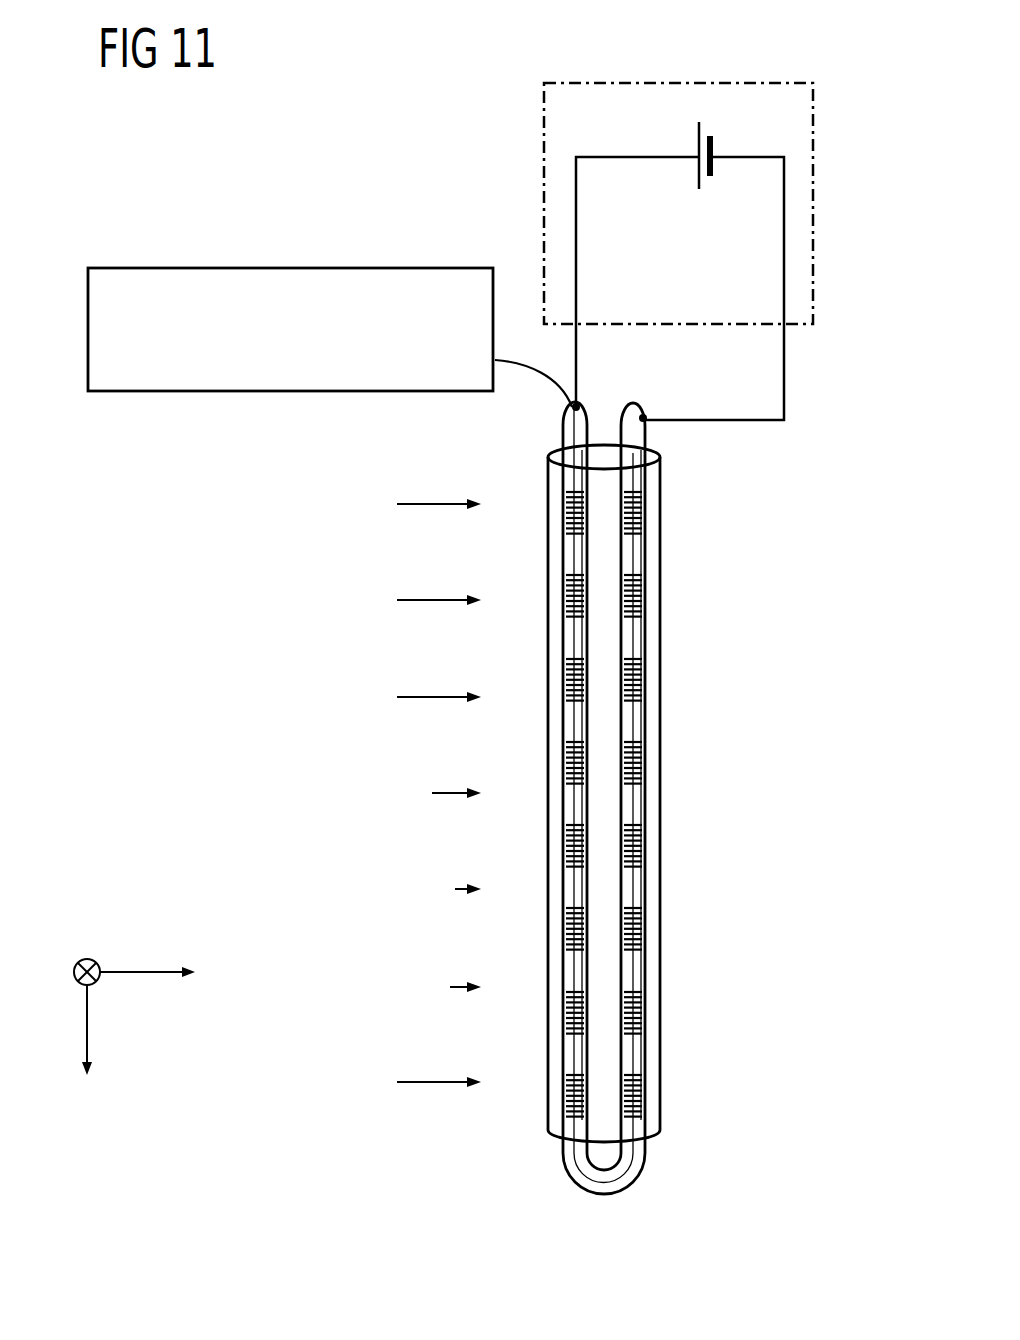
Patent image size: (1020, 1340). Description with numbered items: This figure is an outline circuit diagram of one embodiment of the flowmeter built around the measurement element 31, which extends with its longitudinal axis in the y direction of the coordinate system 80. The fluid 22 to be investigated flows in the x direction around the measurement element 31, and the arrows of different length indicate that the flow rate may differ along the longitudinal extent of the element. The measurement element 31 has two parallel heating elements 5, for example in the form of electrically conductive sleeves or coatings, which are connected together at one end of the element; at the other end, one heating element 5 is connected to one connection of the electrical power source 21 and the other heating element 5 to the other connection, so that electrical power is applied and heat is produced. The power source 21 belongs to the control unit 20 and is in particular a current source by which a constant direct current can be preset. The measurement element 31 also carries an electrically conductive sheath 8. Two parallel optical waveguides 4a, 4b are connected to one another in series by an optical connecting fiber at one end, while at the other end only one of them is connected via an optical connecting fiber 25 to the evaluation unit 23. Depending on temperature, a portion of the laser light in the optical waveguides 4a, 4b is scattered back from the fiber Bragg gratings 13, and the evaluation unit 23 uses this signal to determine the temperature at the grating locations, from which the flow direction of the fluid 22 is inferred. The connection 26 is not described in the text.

The optical waveguide 4a is at (565, 720).
The optical waveguide 4b is at (632, 718).
The heating element 5 is at (628, 1062).
The electrically conductive sheath 8 is at (661, 640).
The fiber Bragg grating 13 is at (643, 847).
The control unit 20 is at (544, 163).
The electrical power source 21 is at (712, 108).
The fluid 22 is at (453, 893).
The evaluation unit 23 is at (293, 393).
The optical connecting fiber 25 is at (533, 375).
The electrical connection lines 26 is at (688, 418).
The measurement element 31 is at (696, 513).
The coordinate system 80 is at (124, 1018).